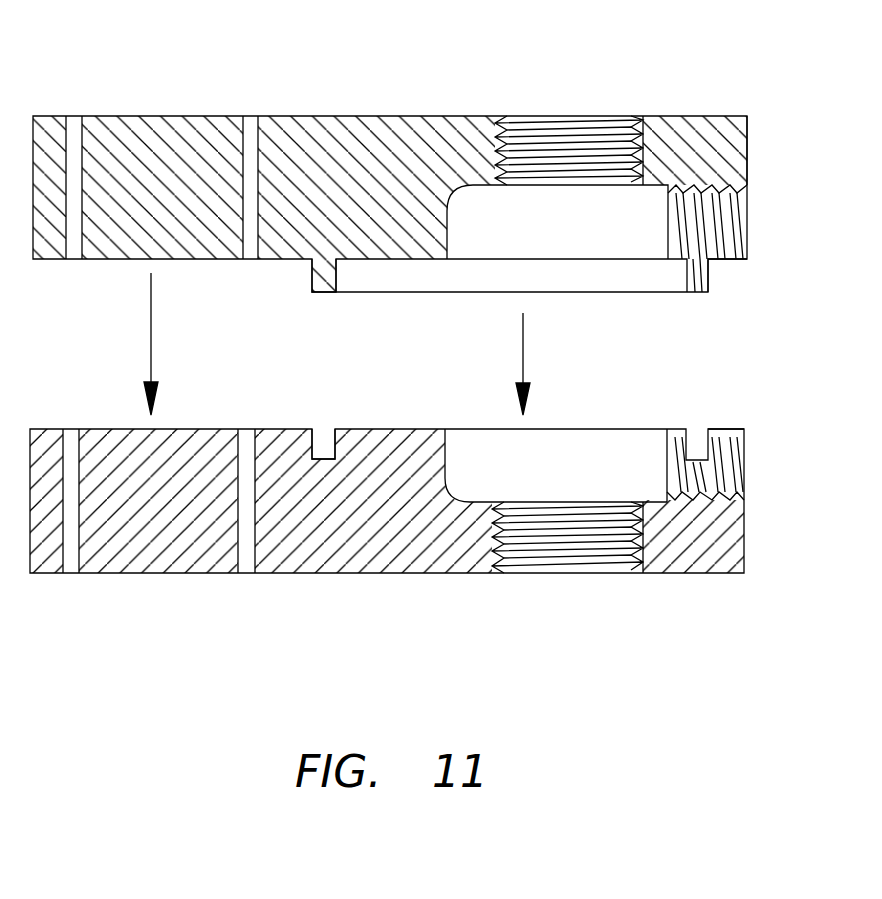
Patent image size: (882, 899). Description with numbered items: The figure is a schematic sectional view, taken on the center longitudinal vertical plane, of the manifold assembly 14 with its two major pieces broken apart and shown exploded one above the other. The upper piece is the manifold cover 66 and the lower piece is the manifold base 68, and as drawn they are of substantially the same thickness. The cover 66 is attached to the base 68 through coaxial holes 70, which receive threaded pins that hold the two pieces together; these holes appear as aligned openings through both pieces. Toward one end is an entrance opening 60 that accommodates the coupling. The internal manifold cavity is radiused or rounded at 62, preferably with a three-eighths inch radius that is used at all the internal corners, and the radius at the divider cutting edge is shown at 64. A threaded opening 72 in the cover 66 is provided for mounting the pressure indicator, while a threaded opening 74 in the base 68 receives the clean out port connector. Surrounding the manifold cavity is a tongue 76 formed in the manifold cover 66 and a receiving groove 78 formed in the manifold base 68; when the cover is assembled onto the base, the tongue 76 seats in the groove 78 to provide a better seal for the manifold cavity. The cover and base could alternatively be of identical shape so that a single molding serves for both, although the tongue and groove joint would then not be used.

The manifold assembly 14 is at (303, 117).
The entrance opening 60 is at (732, 260).
The radius of manifold cavity 62 is at (668, 228).
The radius at divider cutting edge 64 is at (448, 212).
The manifold cover 66 is at (748, 145).
The manifold base 68 is at (745, 542).
The coaxial holes 70 is at (244, 128).
The threaded opening 72 is at (583, 142).
The threaded opening 74 is at (607, 553).
The tongue 76 is at (322, 292).
The receiving groove 78 is at (320, 428).